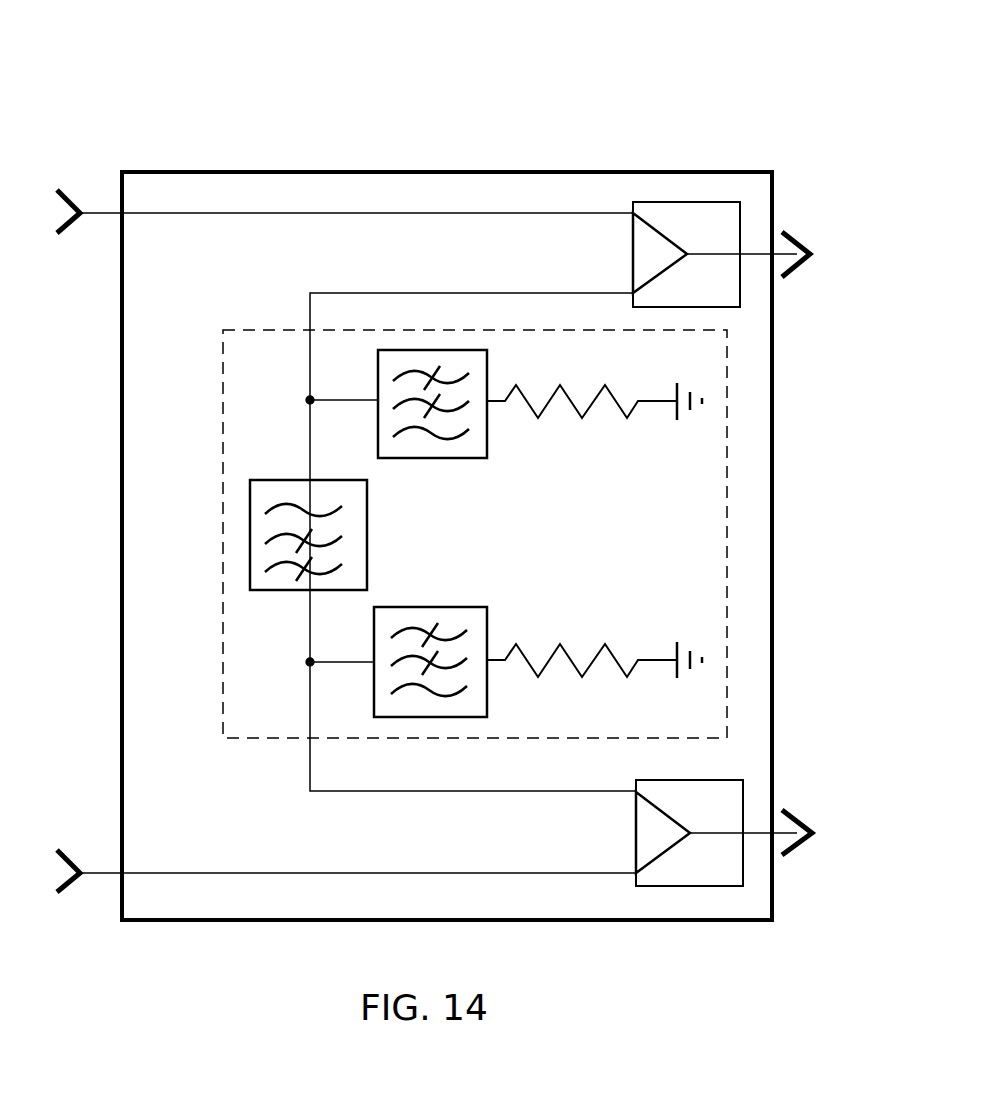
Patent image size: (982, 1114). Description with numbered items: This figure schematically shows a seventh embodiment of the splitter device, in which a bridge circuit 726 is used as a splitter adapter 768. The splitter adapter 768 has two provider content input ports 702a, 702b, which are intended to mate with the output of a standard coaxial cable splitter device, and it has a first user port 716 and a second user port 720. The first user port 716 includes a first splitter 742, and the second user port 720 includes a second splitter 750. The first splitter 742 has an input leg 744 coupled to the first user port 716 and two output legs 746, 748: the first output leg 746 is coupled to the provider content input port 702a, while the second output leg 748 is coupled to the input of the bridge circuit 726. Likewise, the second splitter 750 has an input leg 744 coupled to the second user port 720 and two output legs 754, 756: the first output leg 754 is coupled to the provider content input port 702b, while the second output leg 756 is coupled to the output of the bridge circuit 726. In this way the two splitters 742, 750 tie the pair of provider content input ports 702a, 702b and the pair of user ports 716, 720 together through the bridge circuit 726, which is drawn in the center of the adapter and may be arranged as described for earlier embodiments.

The splitter adapter 768 is at (268, 58).
The provider content input port 702a is at (100, 212).
The provider content input port 702b is at (105, 875).
The first output leg 746 is at (487, 211).
The second output leg 748 is at (512, 292).
The second output leg 756 is at (370, 791).
The first output leg 754 is at (518, 872).
The bridge circuit 726 is at (257, 329).
The first splitter 742 is at (688, 201).
The second splitter 750 is at (688, 885).
The input leg 744 is at (713, 255).
The first user port 716 is at (778, 252).
The second user port 720 is at (780, 835).